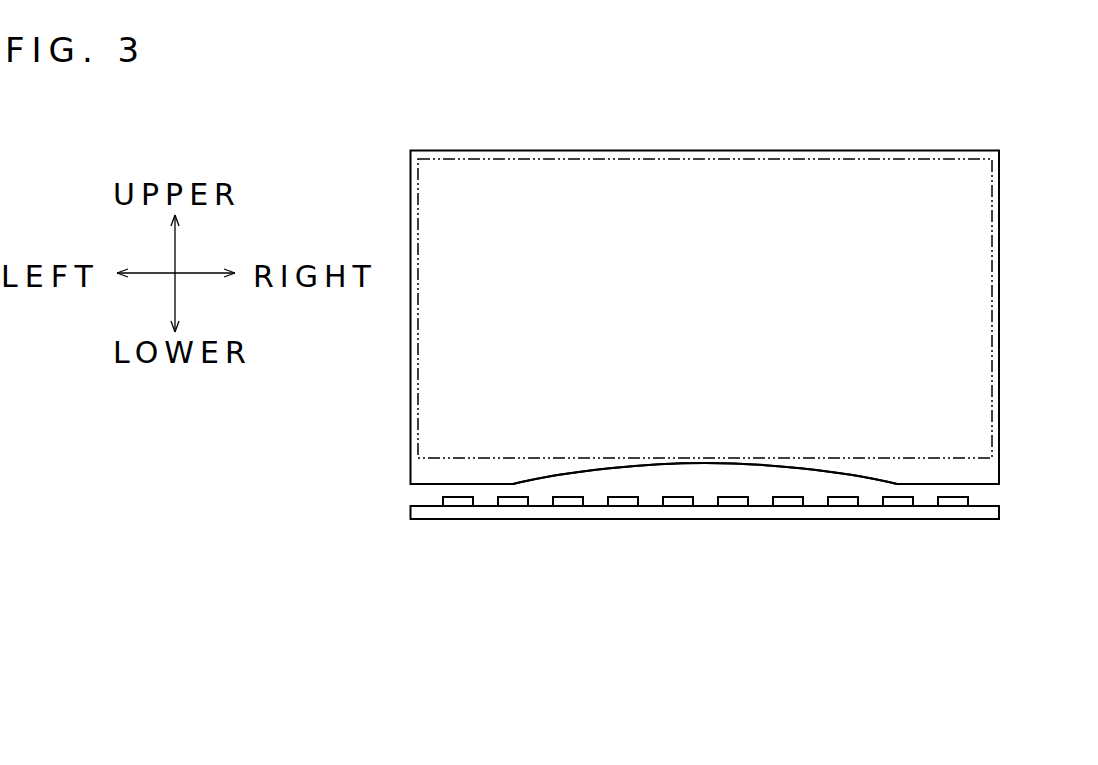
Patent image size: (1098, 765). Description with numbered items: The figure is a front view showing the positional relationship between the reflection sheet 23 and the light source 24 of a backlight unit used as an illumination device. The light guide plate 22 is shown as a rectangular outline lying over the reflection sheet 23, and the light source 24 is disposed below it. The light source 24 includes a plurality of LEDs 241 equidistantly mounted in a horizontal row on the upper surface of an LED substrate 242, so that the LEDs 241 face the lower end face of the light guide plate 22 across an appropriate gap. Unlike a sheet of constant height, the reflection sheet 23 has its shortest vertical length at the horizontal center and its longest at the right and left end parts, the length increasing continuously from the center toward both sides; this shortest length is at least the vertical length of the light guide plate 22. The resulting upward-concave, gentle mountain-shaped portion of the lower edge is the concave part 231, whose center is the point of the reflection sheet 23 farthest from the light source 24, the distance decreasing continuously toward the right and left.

The light guide plate 22 is at (991, 263).
The reflection sheet 23 is at (1002, 203).
The concave part 231 is at (689, 463).
The light source 24 is at (685, 588).
The LEDs 241 is at (508, 500).
The LED substrate 242 is at (423, 513).